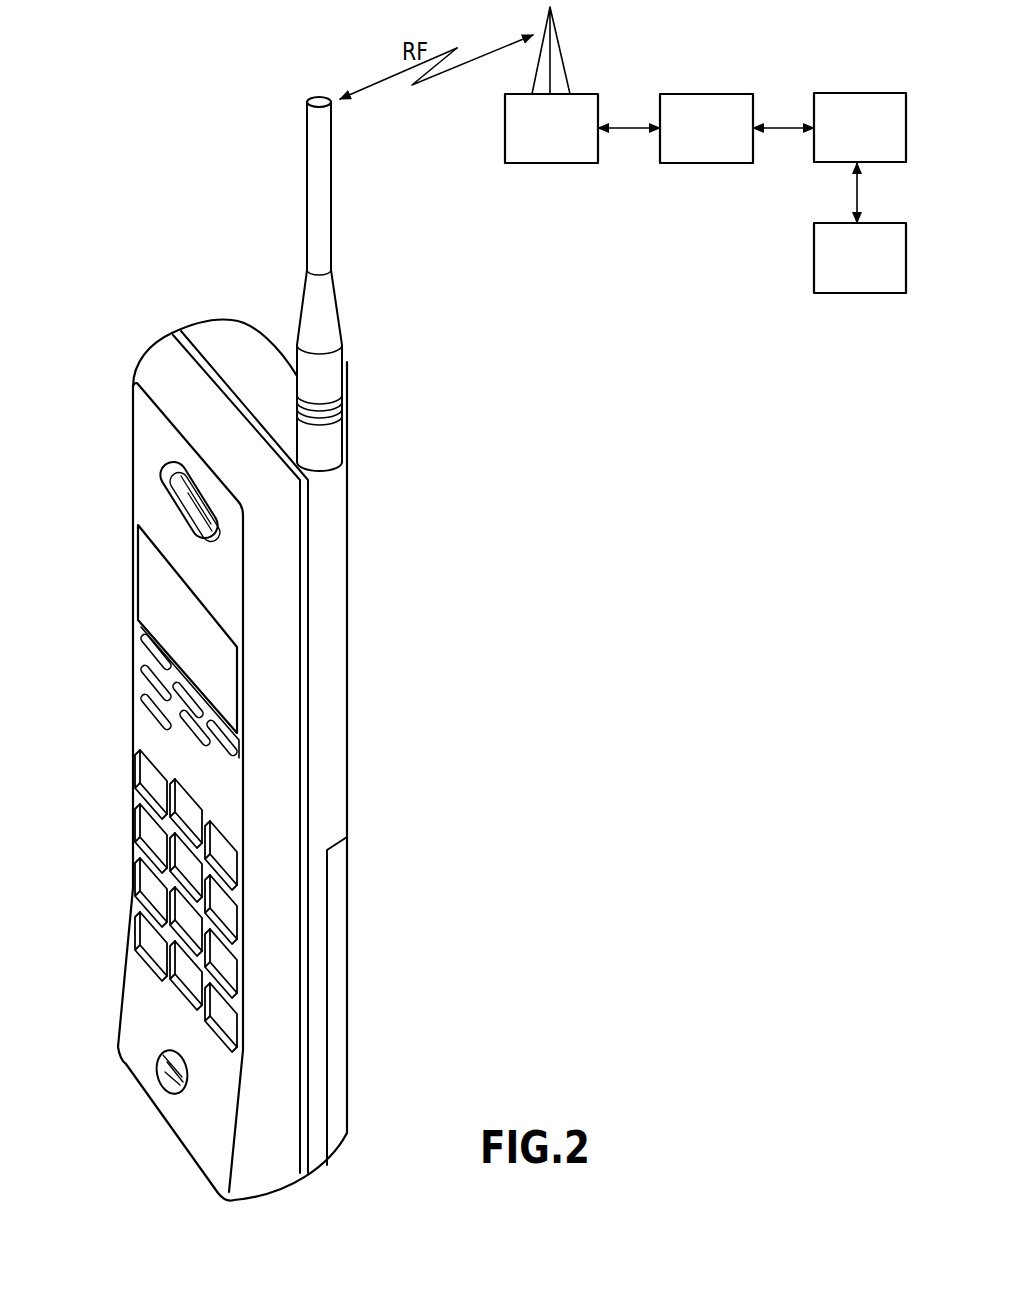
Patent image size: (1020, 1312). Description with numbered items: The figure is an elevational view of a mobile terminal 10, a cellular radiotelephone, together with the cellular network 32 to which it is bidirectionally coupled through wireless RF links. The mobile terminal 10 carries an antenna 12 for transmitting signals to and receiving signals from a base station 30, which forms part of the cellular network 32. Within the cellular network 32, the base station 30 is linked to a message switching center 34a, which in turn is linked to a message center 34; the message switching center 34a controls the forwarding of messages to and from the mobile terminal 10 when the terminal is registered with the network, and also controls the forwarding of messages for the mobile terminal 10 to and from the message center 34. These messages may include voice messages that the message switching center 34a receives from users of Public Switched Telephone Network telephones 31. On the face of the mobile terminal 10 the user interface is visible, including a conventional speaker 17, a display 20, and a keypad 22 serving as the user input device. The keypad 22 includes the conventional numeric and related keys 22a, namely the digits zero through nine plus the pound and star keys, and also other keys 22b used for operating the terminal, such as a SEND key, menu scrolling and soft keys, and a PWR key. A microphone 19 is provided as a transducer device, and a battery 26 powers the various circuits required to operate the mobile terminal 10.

The mobile terminal 10 is at (108, 350).
The antenna 12 is at (313, 172).
The speaker 17 is at (178, 484).
The microphone 19 is at (162, 1080).
The display 20 is at (155, 593).
The keypad 22 is at (211, 842).
The numeric and related keys 22a is at (150, 925).
The other keys 22b is at (190, 702).
The battery 26 is at (343, 976).
The base station 30 is at (552, 163).
The Public Switched Telephone Network telephones 31 is at (832, 293).
The cellular network 32 is at (580, 278).
The message center 34 is at (832, 163).
The message switching center 34a is at (677, 163).